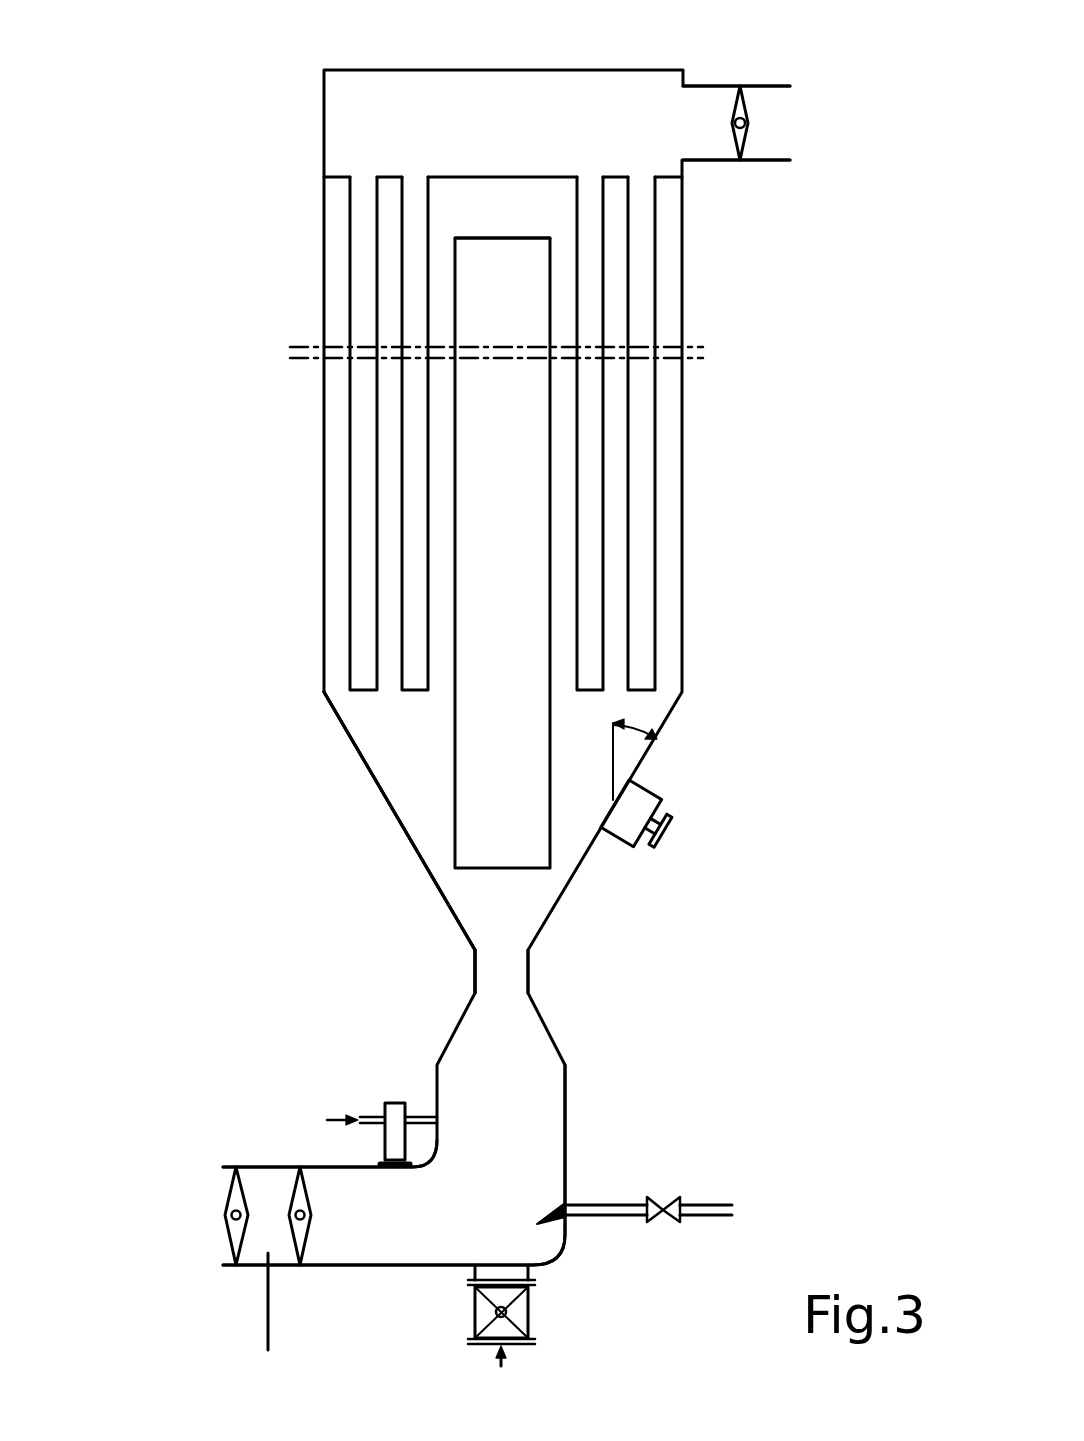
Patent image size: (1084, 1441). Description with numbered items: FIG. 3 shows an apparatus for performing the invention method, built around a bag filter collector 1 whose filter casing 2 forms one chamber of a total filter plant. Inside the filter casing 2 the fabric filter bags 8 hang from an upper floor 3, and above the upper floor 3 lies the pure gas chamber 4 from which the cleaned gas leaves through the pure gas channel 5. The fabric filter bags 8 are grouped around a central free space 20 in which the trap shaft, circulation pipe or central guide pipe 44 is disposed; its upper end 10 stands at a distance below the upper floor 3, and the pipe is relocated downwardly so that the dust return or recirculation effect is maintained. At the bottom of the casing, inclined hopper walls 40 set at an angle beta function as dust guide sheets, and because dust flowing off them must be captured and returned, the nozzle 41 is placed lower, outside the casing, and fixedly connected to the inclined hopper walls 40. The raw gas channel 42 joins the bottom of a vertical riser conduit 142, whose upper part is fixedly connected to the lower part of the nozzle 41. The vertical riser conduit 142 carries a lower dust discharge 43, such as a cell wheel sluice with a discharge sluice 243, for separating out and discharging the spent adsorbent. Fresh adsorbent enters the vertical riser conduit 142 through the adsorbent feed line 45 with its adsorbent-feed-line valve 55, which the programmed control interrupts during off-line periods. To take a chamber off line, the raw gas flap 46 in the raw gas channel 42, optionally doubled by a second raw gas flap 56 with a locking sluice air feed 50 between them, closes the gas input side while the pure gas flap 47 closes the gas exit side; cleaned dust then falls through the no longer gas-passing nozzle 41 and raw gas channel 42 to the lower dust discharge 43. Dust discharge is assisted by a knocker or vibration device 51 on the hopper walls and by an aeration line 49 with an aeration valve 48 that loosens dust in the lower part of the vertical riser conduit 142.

The bag filter collector 1 is at (308, 509).
The filter casing 2 is at (322, 293).
The upper floor 3 is at (535, 177).
The pure gas chamber 4 is at (500, 85).
The pure gas channel 5 is at (698, 90).
The fabric filter bags 8 is at (597, 197).
The upper end of trap shaft 10 is at (502, 214).
The central free space 20 is at (562, 545).
The inclined hopper walls 40 is at (397, 818).
The nozzle 41 is at (528, 962).
The raw gas channel 42 is at (372, 1243).
The lower dust discharge 43 is at (527, 1307).
The central guide pipe 44 is at (452, 719).
The adsorbent feed line 45 is at (363, 1115).
The raw gas flap 46 is at (223, 1212).
The pure gas flap 47 is at (745, 137).
The aeration valve 48 is at (663, 1205).
The aeration line 49 is at (603, 1213).
The locking sluice air feed 50 is at (263, 1317).
The vibration device 51 is at (633, 807).
The adsorbent-feed-line valve 55 is at (400, 1108).
The second raw gas flap 56 is at (303, 1230).
The vertical riser conduit 142 is at (557, 1127).
The discharge sluice 243 is at (520, 1350).